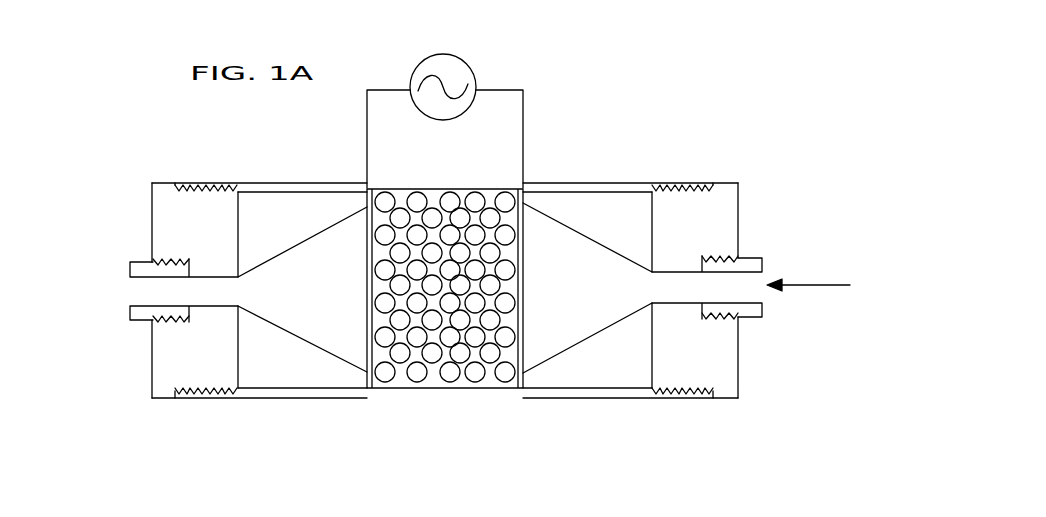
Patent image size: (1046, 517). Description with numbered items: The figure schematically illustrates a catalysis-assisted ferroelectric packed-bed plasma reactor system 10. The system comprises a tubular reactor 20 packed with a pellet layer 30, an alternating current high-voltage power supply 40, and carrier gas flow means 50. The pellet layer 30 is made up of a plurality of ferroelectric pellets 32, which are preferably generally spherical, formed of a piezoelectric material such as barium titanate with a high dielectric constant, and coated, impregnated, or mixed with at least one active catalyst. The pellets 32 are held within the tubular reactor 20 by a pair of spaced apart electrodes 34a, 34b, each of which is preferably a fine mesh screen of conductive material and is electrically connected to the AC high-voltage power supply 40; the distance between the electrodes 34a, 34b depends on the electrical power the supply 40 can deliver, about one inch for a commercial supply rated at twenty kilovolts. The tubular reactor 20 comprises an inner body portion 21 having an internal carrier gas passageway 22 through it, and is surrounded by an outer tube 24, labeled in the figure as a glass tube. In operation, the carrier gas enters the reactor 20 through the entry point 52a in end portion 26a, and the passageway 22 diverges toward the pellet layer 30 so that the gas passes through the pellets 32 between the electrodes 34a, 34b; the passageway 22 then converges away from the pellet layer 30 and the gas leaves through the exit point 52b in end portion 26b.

The catalysis-assisted packed-bed plasma reactor system 10 is at (750, 145).
The tubular reactor 20 is at (588, 183).
The inner body portion 21 is at (692, 141).
The internal carrier gas passageway 22 is at (538, 235).
The outer tube 24 is at (275, 185).
The end portion 26a is at (727, 360).
The end portion 26b is at (163, 352).
The pellet layer 30 is at (435, 387).
The ferroelectric pellets 32 is at (505, 335).
The electrode 34a is at (527, 288).
The electrode 34b is at (368, 292).
The alternating current high-voltage power supply 40 is at (473, 72).
The carrier gas flow means 50 is at (840, 250).
The entry point 52a is at (756, 258).
The exit point 52b is at (128, 263).